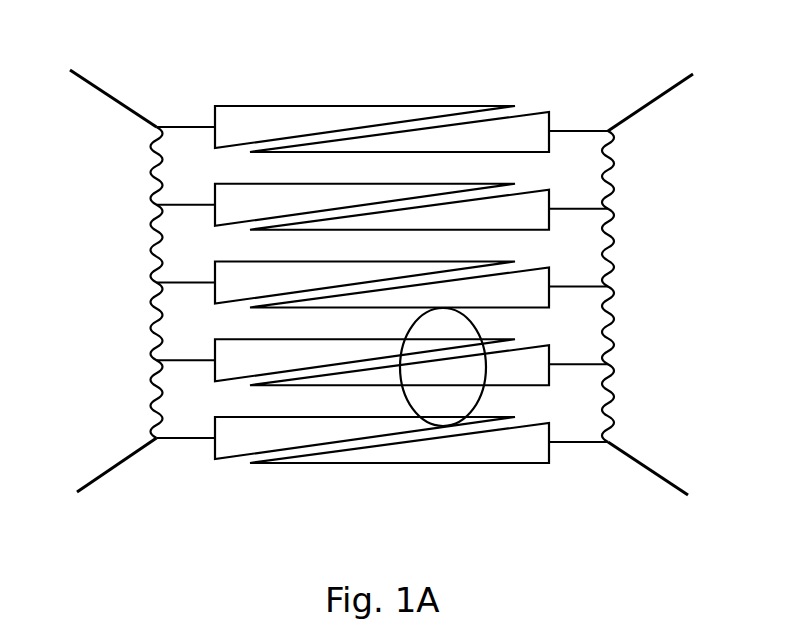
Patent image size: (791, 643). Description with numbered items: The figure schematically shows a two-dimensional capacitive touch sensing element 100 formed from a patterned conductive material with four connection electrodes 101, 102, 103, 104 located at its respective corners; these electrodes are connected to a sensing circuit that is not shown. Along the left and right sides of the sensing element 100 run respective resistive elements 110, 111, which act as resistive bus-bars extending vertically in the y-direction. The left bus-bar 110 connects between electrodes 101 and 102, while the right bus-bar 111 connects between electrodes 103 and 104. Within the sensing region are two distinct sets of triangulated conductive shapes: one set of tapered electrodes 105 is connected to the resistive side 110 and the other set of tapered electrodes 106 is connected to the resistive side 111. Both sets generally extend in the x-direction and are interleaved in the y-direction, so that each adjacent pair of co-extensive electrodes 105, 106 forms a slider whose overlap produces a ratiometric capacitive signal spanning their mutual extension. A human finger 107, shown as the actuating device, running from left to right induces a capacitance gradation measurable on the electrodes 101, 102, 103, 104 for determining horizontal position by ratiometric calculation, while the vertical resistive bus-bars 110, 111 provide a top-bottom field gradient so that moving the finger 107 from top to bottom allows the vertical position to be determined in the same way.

The 2DCT sensing element 100 is at (387, 72).
The connection electrode 101 is at (107, 94).
The connection electrode 102 is at (112, 468).
The connection electrode 103 is at (657, 100).
The connection electrode 104 is at (643, 470).
The tapered electrodes 105 is at (233, 447).
The tapered electrodes 106 is at (490, 450).
The human finger 107 is at (480, 328).
The resistive bus-bar 110 is at (150, 262).
The resistive bus-bar 111 is at (617, 222).